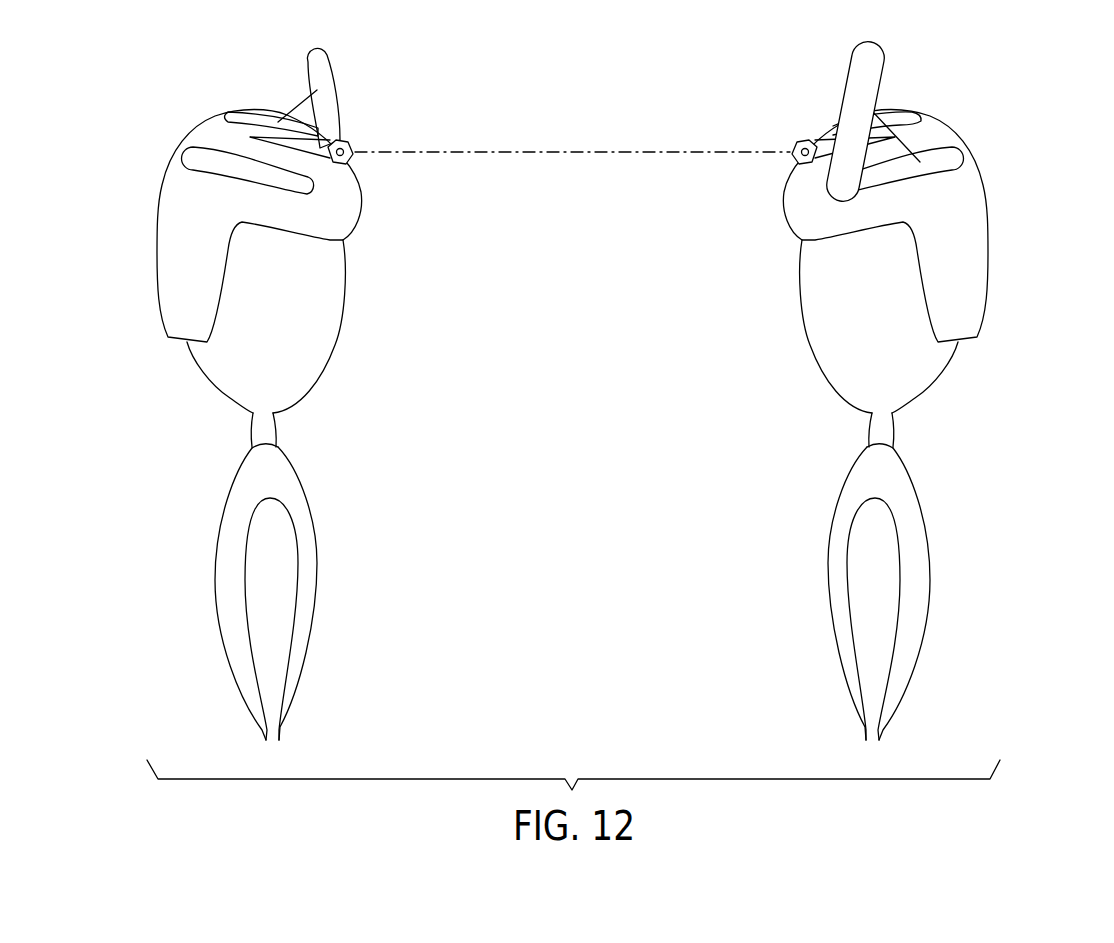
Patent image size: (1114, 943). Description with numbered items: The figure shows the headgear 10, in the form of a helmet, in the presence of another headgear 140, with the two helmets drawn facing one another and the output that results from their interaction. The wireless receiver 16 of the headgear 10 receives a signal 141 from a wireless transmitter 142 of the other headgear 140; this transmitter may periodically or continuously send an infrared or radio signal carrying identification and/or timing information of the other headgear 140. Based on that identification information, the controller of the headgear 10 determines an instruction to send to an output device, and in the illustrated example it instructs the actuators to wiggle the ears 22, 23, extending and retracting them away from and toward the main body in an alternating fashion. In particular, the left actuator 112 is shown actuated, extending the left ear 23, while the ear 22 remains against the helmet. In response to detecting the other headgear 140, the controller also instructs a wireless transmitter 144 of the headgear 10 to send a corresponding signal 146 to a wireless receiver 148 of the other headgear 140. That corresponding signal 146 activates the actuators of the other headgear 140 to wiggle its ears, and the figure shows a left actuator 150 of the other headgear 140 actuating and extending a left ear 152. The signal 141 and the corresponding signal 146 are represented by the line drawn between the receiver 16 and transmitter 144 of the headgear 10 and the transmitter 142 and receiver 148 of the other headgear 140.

The headgear 10 is at (145, 162).
The ear 22 is at (210, 158).
The left actuator 112 is at (295, 104).
The left ear 23 is at (323, 70).
The wireless receiver 16 is at (399, 132).
The wireless transmitter 144 is at (350, 147).
The signal 141 is at (572, 190).
The corresponding signal 146 is at (572, 155).
The other headgear 140 is at (1005, 198).
The wireless transmitter 142 is at (735, 132).
The wireless receiver 148 is at (800, 148).
The left actuator 150 is at (907, 137).
The left ear 152 is at (870, 63).